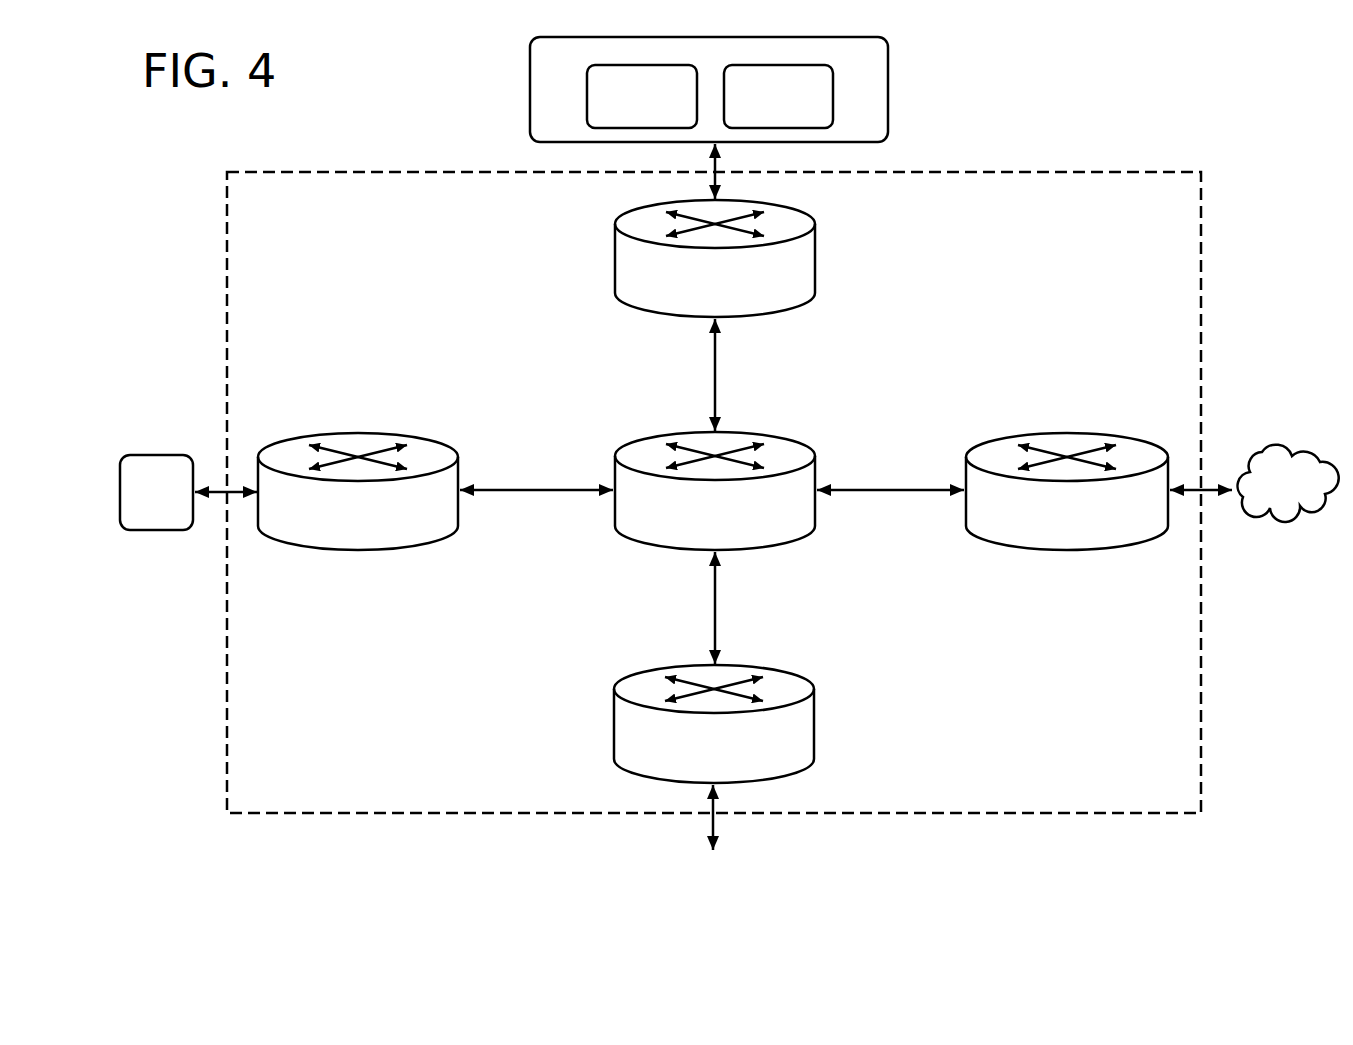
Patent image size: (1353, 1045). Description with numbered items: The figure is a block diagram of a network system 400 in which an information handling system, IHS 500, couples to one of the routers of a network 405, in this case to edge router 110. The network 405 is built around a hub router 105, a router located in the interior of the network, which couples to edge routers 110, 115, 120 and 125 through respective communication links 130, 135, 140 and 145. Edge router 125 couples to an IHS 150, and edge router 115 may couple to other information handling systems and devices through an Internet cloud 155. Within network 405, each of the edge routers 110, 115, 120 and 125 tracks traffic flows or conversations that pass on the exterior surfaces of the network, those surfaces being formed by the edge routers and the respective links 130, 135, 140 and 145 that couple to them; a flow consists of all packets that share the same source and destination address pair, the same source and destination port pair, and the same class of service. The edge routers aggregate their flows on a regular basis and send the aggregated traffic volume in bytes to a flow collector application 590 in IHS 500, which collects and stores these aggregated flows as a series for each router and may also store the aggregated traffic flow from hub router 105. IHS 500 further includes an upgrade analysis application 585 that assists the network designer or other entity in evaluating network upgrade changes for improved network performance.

The network system 400 is at (1137, 138).
The network 405 is at (333, 172).
The information handling system (IHS) 500 is at (892, 91).
The flow collector application 590 is at (586, 111).
The upgrade analysis application 585 is at (857, 100).
The edge router 110 is at (798, 208).
The hub router 105 is at (787, 434).
The edge router 120 is at (785, 668).
The edge router 125 is at (428, 437).
The edge router 115 is at (1122, 437).
The information handling system (IHS) 150 is at (135, 455).
The Internet cloud 155 is at (1276, 514).
The communication link 130 is at (713, 372).
The communication link 135 is at (870, 490).
The communication link 140 is at (712, 602).
The communication link 145 is at (512, 490).